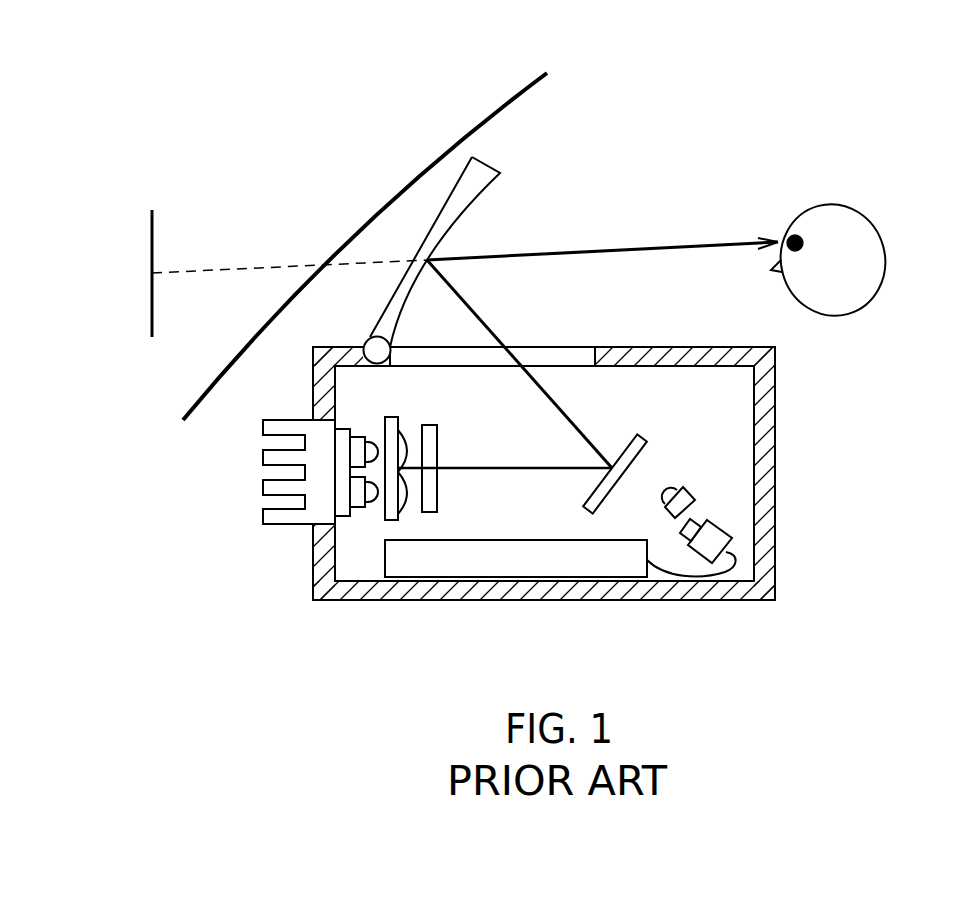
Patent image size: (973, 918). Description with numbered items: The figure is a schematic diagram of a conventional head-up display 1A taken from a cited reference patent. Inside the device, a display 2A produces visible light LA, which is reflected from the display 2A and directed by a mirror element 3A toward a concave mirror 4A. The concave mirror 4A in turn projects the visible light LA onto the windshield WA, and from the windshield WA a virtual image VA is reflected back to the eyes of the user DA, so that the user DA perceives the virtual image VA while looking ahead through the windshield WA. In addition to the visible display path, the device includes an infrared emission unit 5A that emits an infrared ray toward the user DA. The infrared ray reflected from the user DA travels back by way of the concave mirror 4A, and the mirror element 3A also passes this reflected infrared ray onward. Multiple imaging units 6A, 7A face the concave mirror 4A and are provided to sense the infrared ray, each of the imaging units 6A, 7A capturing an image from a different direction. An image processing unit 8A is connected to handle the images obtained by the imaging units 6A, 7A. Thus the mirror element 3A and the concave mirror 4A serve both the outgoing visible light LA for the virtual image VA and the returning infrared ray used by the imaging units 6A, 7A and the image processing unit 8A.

The housing 1A is at (700, 355).
The display 2A is at (452, 452).
The mirror element 3A is at (636, 432).
The concave mirror 4A is at (497, 173).
The infrared emission unit 5A is at (686, 488).
The imaging unit 6A is at (793, 497).
The imaging unit 7A is at (690, 530).
The image processing unit 8A is at (530, 560).
The virtual image VA is at (153, 233).
The windshield WA is at (438, 155).
The visible light LA is at (610, 252).
The user DA is at (850, 203).